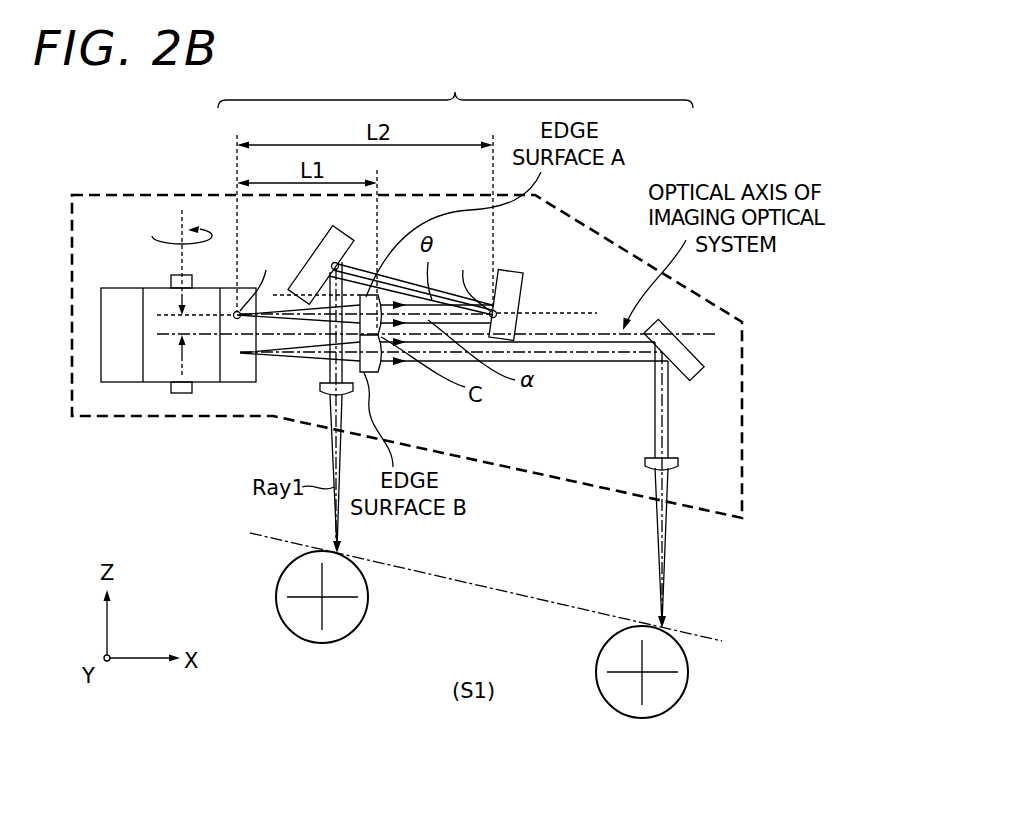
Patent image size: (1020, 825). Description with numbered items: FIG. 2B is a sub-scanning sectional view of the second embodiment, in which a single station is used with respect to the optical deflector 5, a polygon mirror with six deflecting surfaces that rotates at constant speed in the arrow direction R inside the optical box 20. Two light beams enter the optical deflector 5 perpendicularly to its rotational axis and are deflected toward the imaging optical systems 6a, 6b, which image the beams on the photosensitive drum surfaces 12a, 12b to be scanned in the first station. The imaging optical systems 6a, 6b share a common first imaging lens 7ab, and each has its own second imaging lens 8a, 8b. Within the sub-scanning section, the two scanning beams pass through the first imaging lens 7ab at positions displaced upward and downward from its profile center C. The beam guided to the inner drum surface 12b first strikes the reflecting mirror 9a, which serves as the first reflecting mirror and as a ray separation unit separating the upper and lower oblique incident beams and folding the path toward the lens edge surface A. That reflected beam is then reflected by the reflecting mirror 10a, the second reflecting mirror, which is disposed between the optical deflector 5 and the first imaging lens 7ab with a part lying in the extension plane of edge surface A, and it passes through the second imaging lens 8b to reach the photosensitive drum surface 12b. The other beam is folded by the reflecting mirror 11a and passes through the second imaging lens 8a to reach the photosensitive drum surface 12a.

The optical deflector 5 is at (123, 288).
The imaging optical system 6a is at (455, 87).
The imaging optical system 6b is at (455, 87).
The first imaging lens 7ab is at (381, 372).
The second imaging lens 8a is at (645, 462).
The second imaging lens 8b is at (320, 392).
The reflecting mirror 9a is at (514, 277).
The reflecting mirror 10a is at (319, 257).
The reflecting mirror 11a is at (704, 370).
The photosensitive drum surface 12a is at (686, 692).
The photosensitive drum surface 12b is at (364, 626).
The optical box 20 is at (742, 456).